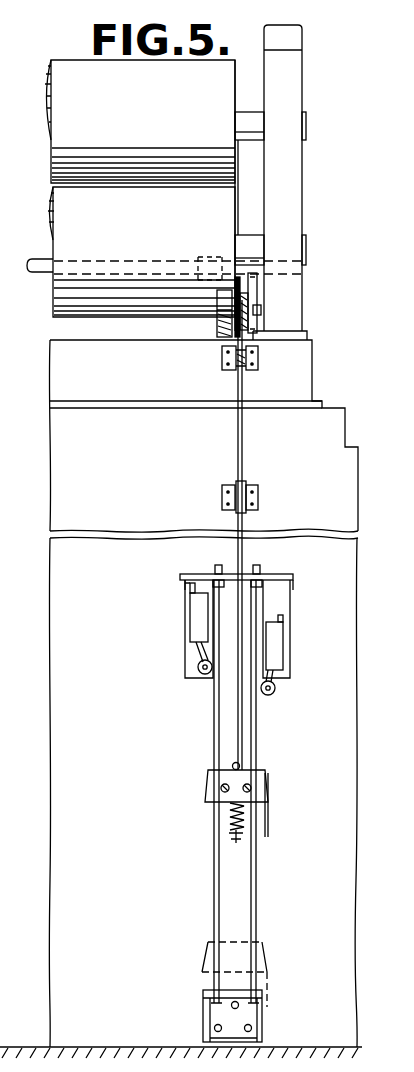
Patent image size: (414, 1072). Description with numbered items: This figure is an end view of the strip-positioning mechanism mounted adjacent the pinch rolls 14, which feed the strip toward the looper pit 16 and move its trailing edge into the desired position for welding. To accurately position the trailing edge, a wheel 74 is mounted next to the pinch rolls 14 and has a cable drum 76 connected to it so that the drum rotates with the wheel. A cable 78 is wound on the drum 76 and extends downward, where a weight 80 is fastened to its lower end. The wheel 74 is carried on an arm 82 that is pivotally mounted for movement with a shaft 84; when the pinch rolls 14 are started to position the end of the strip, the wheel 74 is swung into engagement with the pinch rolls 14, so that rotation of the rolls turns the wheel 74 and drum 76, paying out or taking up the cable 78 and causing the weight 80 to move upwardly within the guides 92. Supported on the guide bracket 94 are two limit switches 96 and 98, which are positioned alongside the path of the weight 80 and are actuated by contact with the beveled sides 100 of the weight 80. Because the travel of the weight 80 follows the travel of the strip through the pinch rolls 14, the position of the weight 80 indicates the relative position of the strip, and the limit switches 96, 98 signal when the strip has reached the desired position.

The pinch rolls 14 is at (40, 175).
The looper pit 16 is at (327, 880).
The wheel 74 is at (220, 331).
The cable drum 76 is at (250, 299).
The cable 78 is at (238, 424).
The weight 80 is at (226, 771).
The arm 82 is at (261, 309).
The shaft 84 is at (40, 262).
The guides 92 is at (250, 864).
The guide bracket 94 is at (205, 576).
The limit switch 96 is at (280, 645).
The limit switch 98 is at (196, 634).
The beveled sides 100 is at (208, 792).